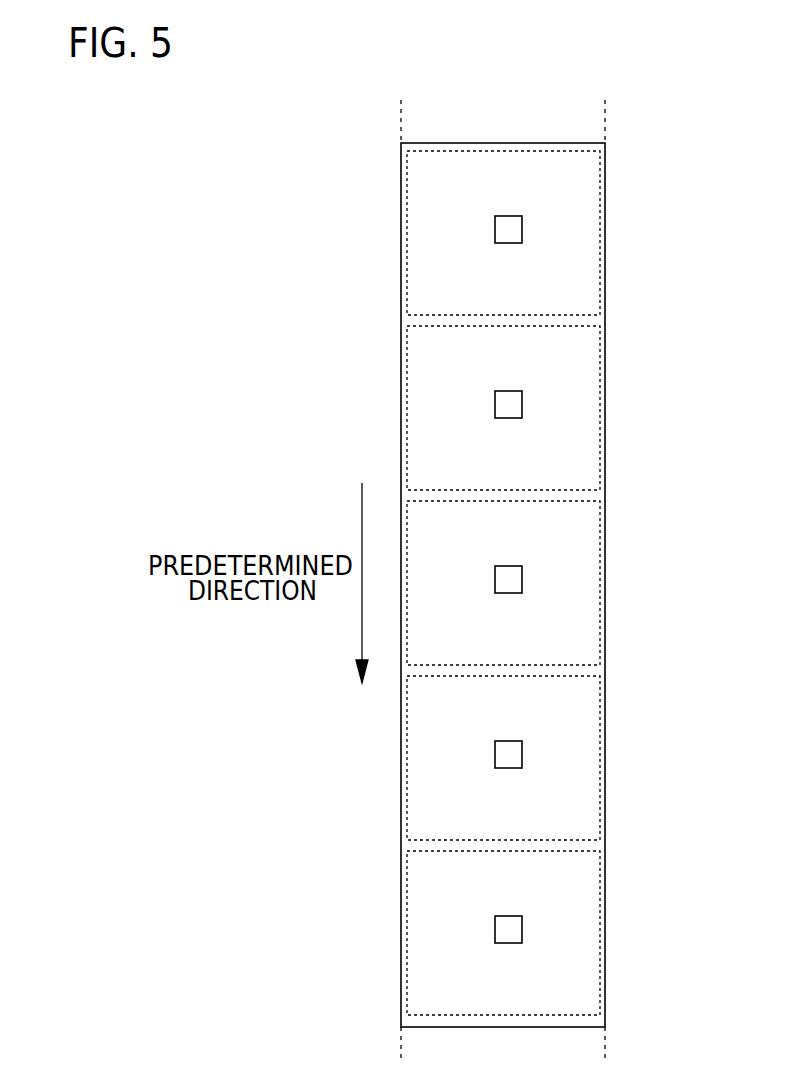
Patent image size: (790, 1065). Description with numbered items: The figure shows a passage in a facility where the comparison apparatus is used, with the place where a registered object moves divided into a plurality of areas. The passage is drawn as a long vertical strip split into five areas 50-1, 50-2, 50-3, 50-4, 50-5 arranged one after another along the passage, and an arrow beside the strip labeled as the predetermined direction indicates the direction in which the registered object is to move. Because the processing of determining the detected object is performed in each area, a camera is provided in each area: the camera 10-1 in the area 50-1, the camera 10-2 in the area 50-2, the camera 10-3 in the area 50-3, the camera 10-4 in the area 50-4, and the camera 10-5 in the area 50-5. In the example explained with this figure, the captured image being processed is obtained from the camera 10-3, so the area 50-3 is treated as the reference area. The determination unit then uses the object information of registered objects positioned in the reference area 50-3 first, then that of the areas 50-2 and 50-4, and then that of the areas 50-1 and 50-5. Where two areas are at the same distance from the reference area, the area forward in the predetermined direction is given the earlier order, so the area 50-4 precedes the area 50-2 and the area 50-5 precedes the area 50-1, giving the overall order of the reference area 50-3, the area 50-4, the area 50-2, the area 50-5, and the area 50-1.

The camera 10-1 is at (508, 216).
The camera 10-2 is at (508, 391).
The camera 10-3 is at (508, 566).
The camera 10-4 is at (508, 741).
The camera 10-5 is at (508, 916).
The area 50-1 is at (605, 215).
The area 50-2 is at (605, 390).
The area 50-3 is at (605, 565).
The area 50-4 is at (605, 740).
The area 50-5 is at (605, 917).